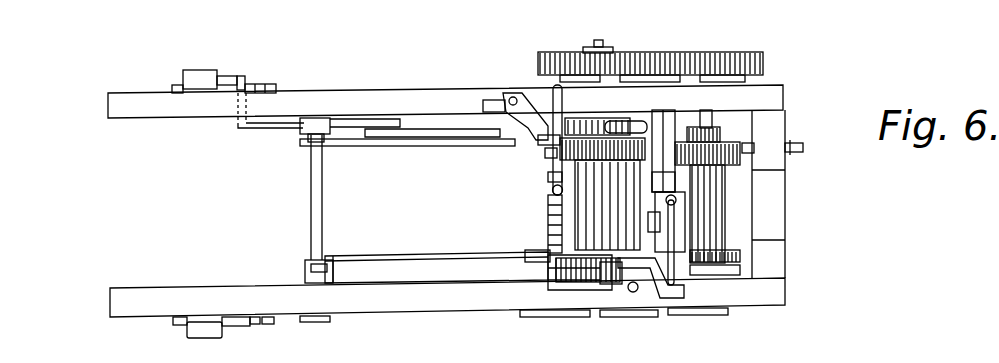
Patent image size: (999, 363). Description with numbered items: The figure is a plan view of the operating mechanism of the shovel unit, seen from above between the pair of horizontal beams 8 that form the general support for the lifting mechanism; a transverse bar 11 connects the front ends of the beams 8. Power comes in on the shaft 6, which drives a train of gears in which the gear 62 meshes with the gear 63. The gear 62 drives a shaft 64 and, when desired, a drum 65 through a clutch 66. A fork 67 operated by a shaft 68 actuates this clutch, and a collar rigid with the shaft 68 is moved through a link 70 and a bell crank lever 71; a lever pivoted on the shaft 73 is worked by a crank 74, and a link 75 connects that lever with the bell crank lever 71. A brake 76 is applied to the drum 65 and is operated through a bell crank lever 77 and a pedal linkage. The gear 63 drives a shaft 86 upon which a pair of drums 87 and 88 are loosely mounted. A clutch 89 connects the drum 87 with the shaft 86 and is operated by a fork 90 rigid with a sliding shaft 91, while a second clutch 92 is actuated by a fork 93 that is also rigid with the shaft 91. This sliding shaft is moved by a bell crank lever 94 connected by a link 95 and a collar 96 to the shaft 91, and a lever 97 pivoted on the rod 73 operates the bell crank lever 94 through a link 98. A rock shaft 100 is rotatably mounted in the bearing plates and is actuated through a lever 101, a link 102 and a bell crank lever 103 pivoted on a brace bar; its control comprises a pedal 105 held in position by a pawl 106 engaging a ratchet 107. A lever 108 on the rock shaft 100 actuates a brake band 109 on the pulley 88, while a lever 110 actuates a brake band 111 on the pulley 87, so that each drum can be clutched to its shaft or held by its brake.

The shaft 6 is at (658, 180).
The horizontal beams 8 is at (455, 100).
The transverse bar 11 is at (776, 232).
The gear 62 is at (740, 58).
The gear 63 is at (620, 57).
The shaft 64 is at (708, 126).
The drum 65 is at (722, 212).
The clutch 66 is at (742, 272).
The fork 67 is at (742, 262).
The shaft 68 is at (664, 120).
The link 70 is at (676, 266).
The bell crank lever 71 is at (652, 300).
The shaft 73 is at (312, 200).
The crank 74 is at (305, 272).
The link 75 is at (428, 258).
The brake 76 is at (755, 148).
The bell crank lever 77 is at (803, 147).
The shaft 86 is at (597, 40).
The drum 87 is at (556, 222).
The drum 88 is at (545, 141).
The clutch 89 is at (580, 286).
The fork 90 is at (612, 286).
The sliding shaft 91 is at (560, 283).
The clutch 92 is at (585, 120).
The fork 93 is at (625, 122).
The bell crank lever 94 is at (517, 94).
The link 95 is at (556, 85).
The collar 96 is at (560, 152).
The lever 97 is at (306, 128).
The link 98 is at (370, 147).
The rock shaft 100 is at (576, 192).
The lever 101 is at (490, 100).
The link 102 is at (410, 130).
The bell crank lever 103 is at (350, 119).
The pedal 105 is at (230, 60).
The pawl 106 is at (226, 96).
The ratchet 107 is at (268, 85).
The lever 108 is at (552, 176).
The brake band 109 is at (548, 152).
The lever 110 is at (545, 256).
The brake band 111 is at (649, 222).